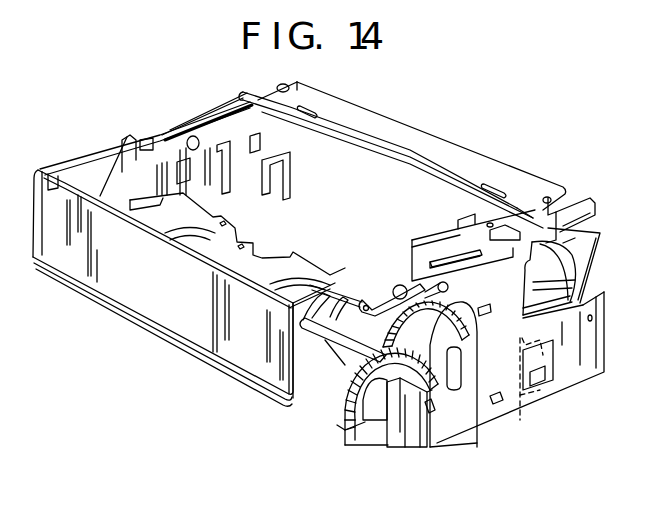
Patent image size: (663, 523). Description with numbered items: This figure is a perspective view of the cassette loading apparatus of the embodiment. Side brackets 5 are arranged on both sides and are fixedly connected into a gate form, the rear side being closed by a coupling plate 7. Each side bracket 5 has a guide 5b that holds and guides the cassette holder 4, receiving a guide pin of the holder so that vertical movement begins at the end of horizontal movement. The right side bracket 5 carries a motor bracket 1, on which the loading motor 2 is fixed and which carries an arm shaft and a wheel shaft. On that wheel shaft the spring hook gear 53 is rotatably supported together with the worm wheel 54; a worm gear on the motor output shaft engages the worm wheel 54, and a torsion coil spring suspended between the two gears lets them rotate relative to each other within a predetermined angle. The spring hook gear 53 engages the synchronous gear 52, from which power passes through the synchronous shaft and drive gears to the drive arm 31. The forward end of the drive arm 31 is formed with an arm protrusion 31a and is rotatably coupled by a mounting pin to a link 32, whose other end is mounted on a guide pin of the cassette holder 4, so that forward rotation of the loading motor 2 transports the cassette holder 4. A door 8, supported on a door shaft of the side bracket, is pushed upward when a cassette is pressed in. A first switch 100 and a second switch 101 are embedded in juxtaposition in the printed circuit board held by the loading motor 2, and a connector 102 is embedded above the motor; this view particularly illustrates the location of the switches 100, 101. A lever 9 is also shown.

The motor bracket 1 is at (577, 372).
The loading motor 2 is at (565, 284).
The cassette holder 4 is at (250, 240).
The side bracket 5 is at (204, 116).
The guide 5b is at (289, 180).
The coupling plate 7 is at (530, 176).
The door 8 is at (192, 330).
The lever 9 is at (342, 370).
The drive arm 31 is at (421, 283).
The arm protrusion 31a is at (342, 378).
The link 32 is at (376, 297).
The synchronous gear 52 is at (380, 425).
The spring hook gear 53 is at (442, 372).
The worm wheel 54 is at (475, 350).
The first switch 100 is at (543, 382).
The second switch 101 is at (520, 352).
The connector 102 is at (565, 238).